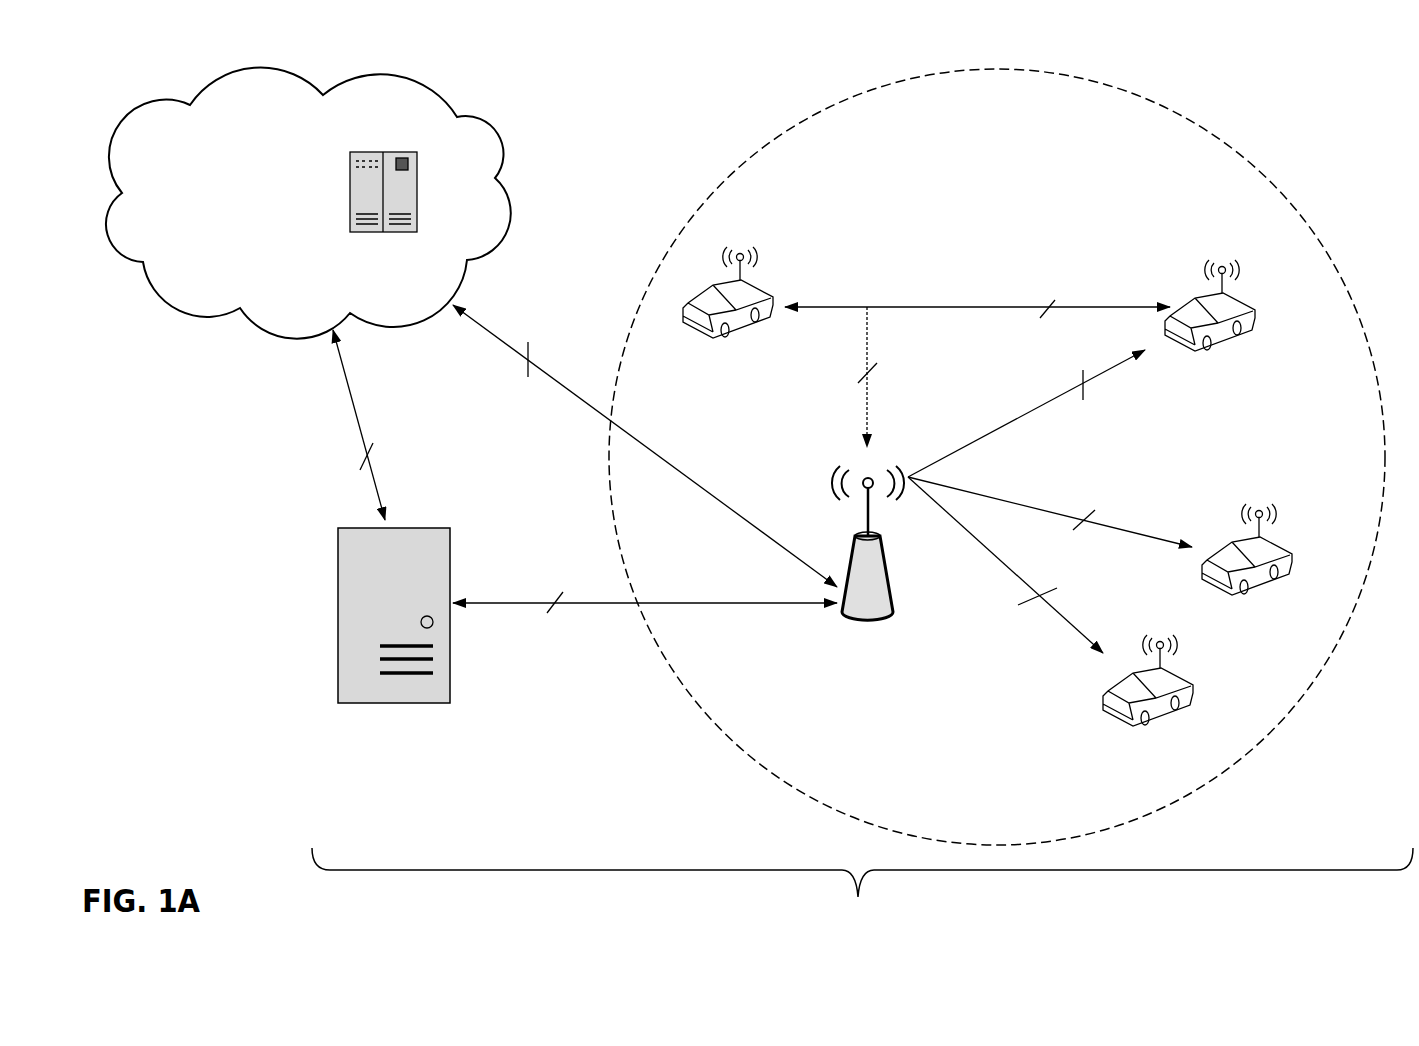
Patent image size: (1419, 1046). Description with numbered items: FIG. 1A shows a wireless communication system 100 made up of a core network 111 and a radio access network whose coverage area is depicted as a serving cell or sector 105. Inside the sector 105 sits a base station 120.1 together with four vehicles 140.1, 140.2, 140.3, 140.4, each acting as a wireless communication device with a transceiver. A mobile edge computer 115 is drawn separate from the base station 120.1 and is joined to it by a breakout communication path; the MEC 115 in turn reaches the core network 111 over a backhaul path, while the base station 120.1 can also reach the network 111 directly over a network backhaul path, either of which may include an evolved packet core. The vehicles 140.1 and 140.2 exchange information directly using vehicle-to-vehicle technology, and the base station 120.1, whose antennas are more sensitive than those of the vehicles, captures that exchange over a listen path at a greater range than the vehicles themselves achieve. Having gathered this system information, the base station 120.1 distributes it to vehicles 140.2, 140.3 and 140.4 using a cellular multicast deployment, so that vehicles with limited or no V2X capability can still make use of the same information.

The wireless communication system 100 is at (1340, 130).
The serving cell or sector 105 is at (1327, 680).
The core network 111 is at (308, 203).
The mobile edge computer 115 is at (412, 588).
The base station 120.1 is at (868, 564).
The vehicle 140.1 is at (728, 312).
The vehicle 140.2 is at (1223, 321).
The vehicle 140.3 is at (1254, 568).
The vehicle 140.4 is at (1148, 701).